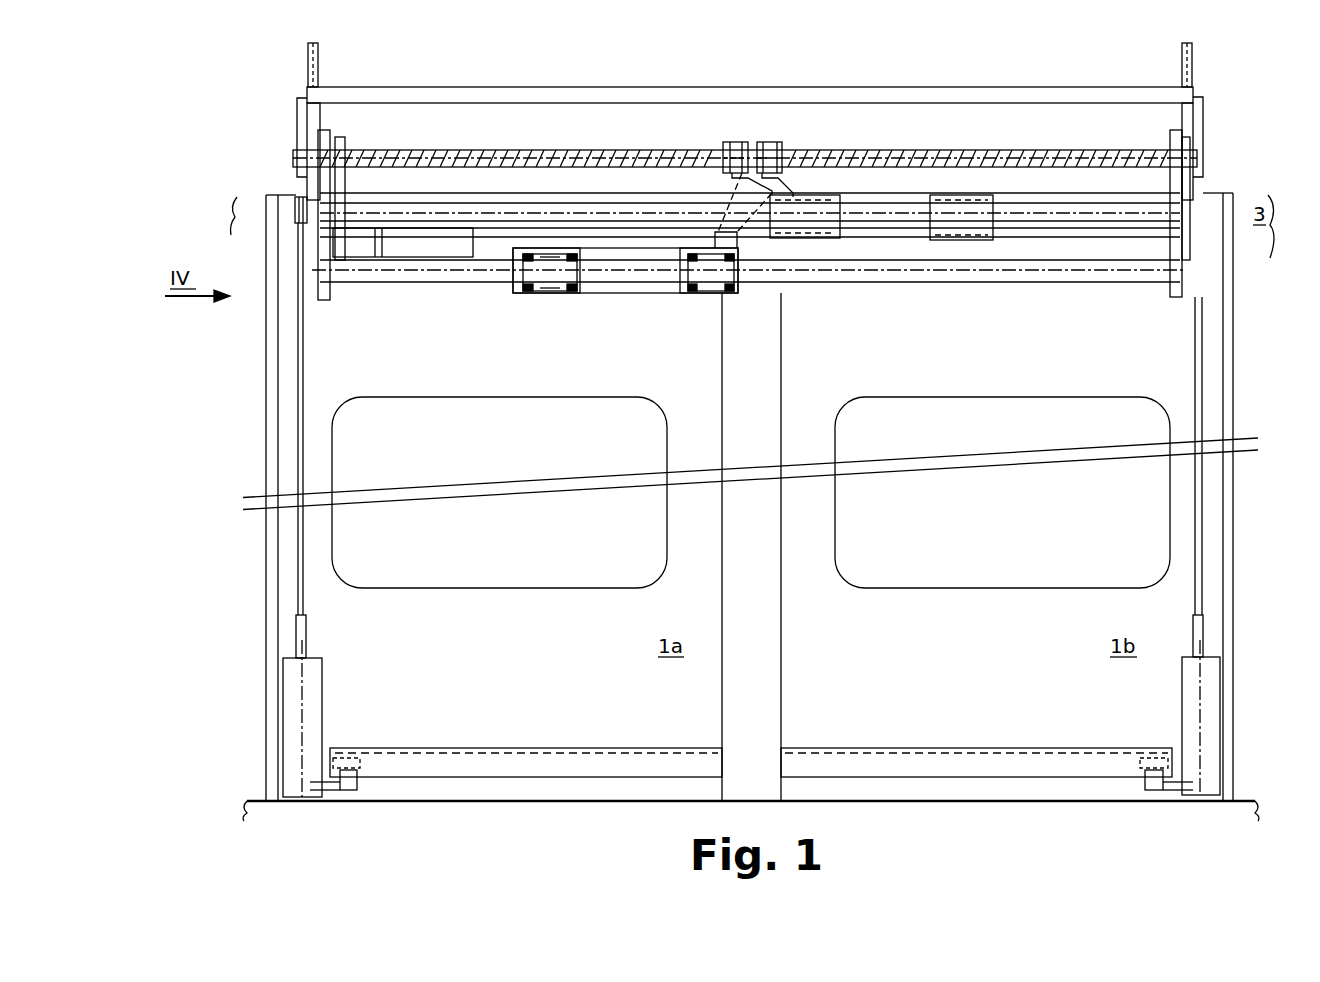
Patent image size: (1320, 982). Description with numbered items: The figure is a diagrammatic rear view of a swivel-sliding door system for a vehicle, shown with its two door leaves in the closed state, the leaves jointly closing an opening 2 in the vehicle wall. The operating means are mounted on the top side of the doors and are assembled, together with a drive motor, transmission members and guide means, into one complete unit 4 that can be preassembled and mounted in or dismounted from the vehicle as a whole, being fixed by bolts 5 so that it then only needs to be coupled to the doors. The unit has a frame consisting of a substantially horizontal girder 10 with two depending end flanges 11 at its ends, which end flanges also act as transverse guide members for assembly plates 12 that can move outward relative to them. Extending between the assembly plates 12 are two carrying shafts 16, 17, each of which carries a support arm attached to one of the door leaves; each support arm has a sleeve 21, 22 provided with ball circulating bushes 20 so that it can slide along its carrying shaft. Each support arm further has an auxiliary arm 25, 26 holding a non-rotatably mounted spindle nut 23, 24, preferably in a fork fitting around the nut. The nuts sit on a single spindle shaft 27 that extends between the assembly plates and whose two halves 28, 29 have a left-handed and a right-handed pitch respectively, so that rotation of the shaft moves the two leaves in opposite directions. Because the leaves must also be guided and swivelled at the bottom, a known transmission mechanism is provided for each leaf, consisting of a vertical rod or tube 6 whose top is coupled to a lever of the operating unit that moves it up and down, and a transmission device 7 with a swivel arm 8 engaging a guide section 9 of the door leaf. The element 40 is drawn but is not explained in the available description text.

The opening 2 is at (1172, 377).
The unit 4 is at (746, 157).
The bolts 5 is at (308, 60).
The vertical rod or tube 6 is at (298, 362).
The transmission device 7 is at (290, 694).
The swivel arm 8 is at (348, 790).
The guide section 9 is at (446, 748).
The horizontal girder 10 is at (604, 87).
The end flanges 11 is at (310, 118).
The assembly plates 12 is at (324, 178).
The carrying shaft 16 is at (998, 282).
The carrying shaft 17 is at (1087, 237).
The ball circulating bushes 20 is at (545, 292).
The sleeve 21 is at (875, 231).
The sleeve 22 is at (625, 294).
The spindle nut 23 is at (725, 140).
The spindle nut 24 is at (782, 143).
The auxiliary arm 25 is at (732, 179).
The auxiliary arm 26 is at (725, 272).
The spindle shaft 27 is at (745, 105).
The half of the spindle shaft 28 is at (994, 150).
The half of the spindle shaft 29 is at (551, 150).
The side plate 40 is at (297, 148).